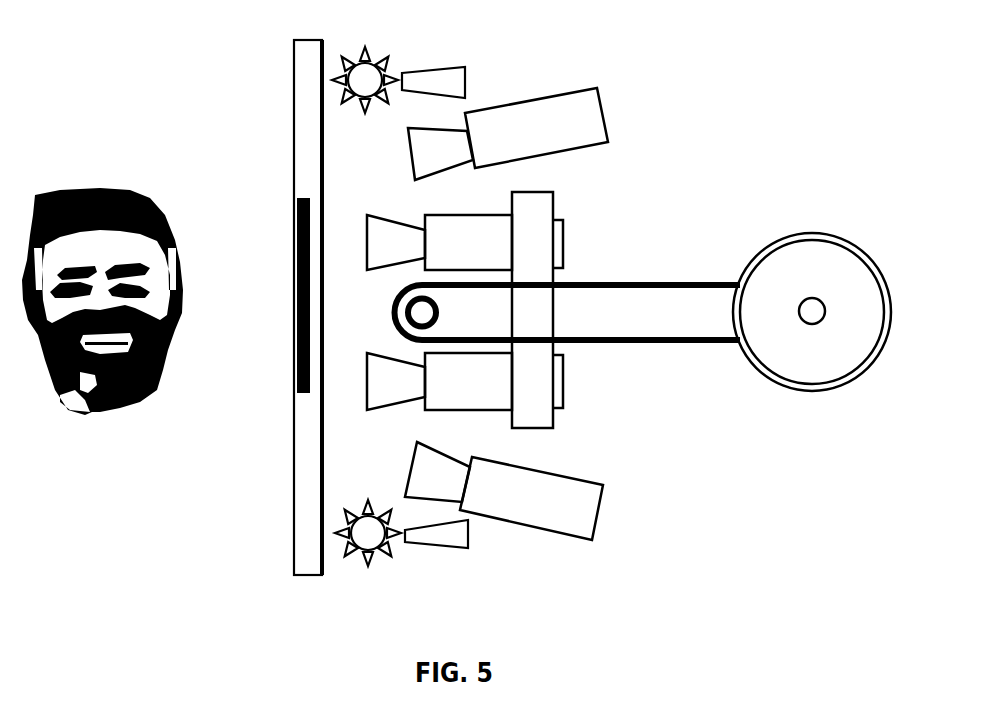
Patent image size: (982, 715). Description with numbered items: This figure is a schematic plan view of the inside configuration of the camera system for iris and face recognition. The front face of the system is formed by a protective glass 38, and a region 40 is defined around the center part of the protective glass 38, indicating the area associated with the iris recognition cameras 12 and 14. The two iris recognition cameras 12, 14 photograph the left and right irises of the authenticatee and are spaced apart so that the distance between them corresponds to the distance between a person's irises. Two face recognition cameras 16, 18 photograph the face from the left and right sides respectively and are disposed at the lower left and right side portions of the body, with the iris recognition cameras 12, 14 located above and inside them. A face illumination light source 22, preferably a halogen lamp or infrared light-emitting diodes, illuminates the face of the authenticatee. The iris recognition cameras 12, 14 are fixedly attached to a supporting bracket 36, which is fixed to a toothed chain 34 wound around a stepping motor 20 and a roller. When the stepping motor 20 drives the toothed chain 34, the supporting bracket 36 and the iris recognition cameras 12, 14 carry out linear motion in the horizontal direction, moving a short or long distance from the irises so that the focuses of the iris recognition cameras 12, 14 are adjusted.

The iris recognition camera 12 is at (567, 242).
The iris recognition camera 14 is at (562, 382).
The face recognition camera 16 is at (590, 112).
The face recognition camera 18 is at (543, 522).
The stepping motor 20 is at (818, 268).
The face illumination light source 22 is at (385, 65).
The toothed chain 34 is at (650, 283).
The supporting bracket 36 is at (537, 420).
The protective glass 38 is at (308, 135).
The region 40 is at (297, 228).